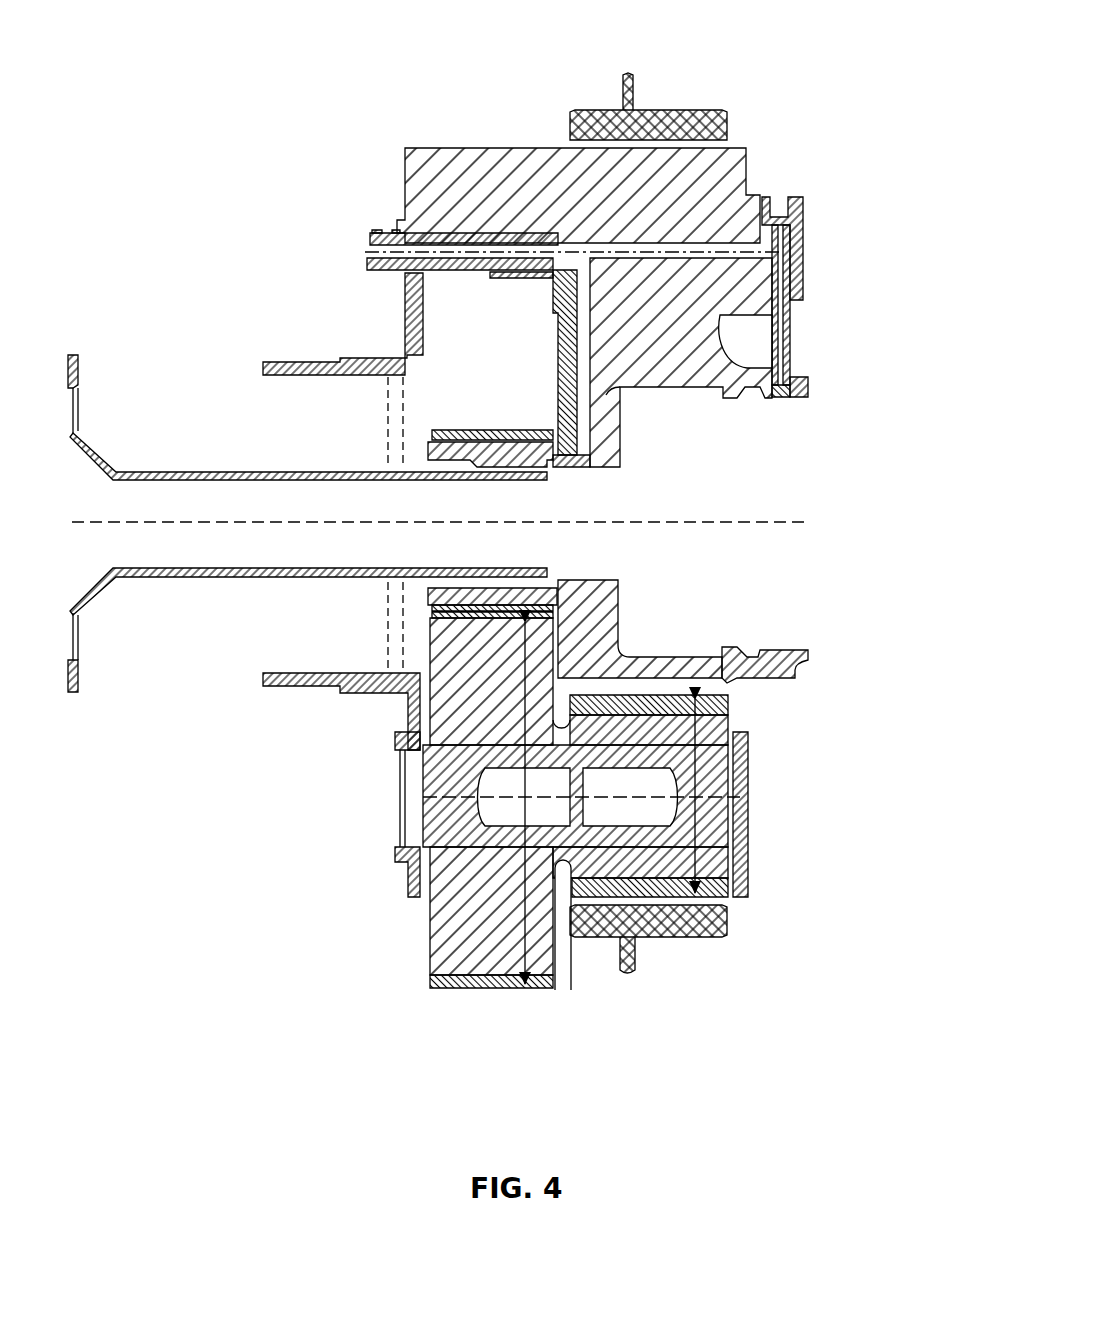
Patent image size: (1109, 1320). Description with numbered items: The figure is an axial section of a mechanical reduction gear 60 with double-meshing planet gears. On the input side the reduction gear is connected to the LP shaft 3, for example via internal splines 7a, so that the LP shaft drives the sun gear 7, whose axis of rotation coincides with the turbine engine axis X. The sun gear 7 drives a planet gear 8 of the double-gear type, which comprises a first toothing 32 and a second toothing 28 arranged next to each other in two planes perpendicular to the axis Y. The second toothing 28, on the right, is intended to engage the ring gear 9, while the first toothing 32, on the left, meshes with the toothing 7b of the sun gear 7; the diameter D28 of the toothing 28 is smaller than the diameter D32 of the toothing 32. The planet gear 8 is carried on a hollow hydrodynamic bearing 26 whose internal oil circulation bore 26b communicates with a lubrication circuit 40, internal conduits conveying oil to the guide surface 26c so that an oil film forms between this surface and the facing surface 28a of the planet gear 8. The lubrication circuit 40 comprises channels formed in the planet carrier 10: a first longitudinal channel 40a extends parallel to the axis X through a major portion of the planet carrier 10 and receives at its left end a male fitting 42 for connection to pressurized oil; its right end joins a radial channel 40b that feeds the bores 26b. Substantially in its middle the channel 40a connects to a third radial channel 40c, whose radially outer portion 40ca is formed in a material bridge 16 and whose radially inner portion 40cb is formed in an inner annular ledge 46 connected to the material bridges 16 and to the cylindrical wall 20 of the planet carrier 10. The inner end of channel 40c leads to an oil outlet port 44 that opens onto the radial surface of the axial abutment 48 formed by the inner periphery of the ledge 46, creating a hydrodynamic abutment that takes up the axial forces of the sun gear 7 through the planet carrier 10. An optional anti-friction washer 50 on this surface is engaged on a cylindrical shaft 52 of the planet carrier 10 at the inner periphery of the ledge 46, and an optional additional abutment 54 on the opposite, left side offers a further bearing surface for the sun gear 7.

The reduction gear 60 is at (266, 86).
The planet carrier 10 is at (490, 137).
The ring gear 9 is at (568, 93).
The material bridge 16 is at (735, 165).
The male fitting 42 is at (373, 235).
The lubrication circuit 40 is at (563, 228).
The first longitudinal channel 40a is at (493, 250).
The channel 40b is at (782, 327).
The third channel 40c is at (913, 363).
The radially outer portion 40ca is at (603, 317).
The radially inner portion 40cb is at (605, 418).
The axial abutment 48 is at (563, 460).
The washer 50 is at (555, 457).
The inner annular ledge 46 is at (608, 435).
The sun gear 7 is at (416, 598).
The internal splines 7a is at (478, 615).
The toothing of the sun gear 7b is at (500, 432).
The additional abutment 54 is at (393, 430).
The oil outlet port 44 is at (520, 472).
The LP shaft 3 is at (158, 576).
The axis of rotation X is at (95, 524).
The axis Y is at (742, 732).
The surface of the planet gear 28a is at (425, 826).
The cylindrical shaft 52 is at (553, 582).
The first toothing 32 is at (463, 990).
The hydrodynamic bearing 26 is at (637, 838).
The internal oil circulation bore 26b is at (597, 818).
The guide surface 26c is at (550, 978).
The second toothing 28 is at (712, 893).
The planet gear 8 is at (740, 905).
The cylindrical wall 20 is at (683, 657).
The diameter of the second toothing D28 is at (743, 802).
The diameter of the first toothing D32 is at (492, 990).